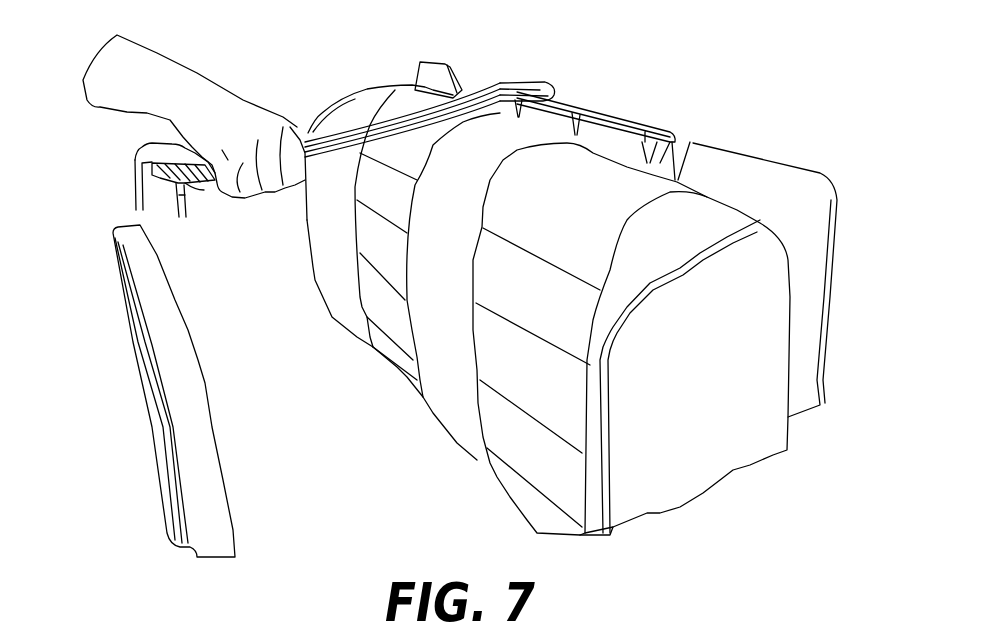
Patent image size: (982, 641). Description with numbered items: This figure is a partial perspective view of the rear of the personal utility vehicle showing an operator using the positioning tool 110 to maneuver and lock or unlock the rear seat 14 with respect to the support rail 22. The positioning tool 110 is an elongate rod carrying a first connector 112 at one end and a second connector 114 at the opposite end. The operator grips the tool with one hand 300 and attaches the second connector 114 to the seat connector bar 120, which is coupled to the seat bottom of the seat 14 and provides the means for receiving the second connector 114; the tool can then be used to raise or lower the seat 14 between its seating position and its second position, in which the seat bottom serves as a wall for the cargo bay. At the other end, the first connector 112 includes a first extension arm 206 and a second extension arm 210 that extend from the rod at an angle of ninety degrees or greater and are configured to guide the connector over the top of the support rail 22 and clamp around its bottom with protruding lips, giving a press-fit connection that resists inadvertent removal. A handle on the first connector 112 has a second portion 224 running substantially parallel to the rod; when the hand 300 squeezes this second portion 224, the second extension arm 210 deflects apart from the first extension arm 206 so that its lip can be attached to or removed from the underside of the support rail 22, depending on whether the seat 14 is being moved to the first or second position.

The rear seat 14 is at (677, 437).
The support rail 22 is at (217, 428).
The positioning tool 110 is at (388, 92).
The first connector 112 is at (138, 170).
The second connector 114 is at (533, 87).
The seat connector bar 120 is at (627, 118).
The first extension arm 206 is at (184, 198).
The second extension arm 210 is at (130, 197).
The second portion 224 is at (205, 192).
The hand 300 is at (193, 90).